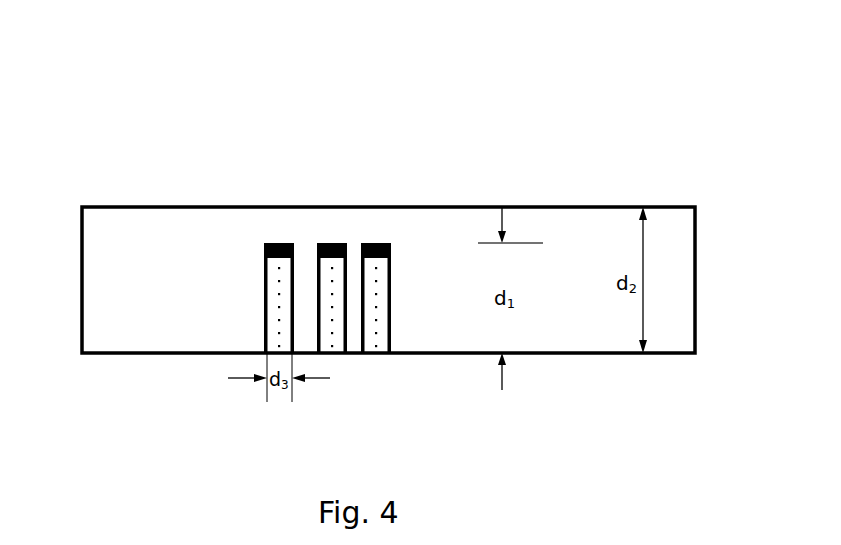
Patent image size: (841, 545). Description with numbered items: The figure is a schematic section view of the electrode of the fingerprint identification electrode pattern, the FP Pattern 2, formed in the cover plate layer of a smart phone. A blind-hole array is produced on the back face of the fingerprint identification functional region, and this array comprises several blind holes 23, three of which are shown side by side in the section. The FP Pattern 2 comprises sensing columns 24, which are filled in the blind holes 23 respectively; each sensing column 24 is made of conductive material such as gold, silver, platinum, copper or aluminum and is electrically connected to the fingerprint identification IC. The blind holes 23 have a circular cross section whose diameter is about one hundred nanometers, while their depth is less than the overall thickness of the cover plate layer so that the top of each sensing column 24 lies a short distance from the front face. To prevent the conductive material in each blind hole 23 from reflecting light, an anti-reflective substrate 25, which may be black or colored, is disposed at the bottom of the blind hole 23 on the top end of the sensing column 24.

The FP Pattern 2 is at (360, 369).
The blind hole 23 is at (264, 270).
The sensing column 24 is at (381, 321).
The anti-reflective substrate 25 is at (328, 246).